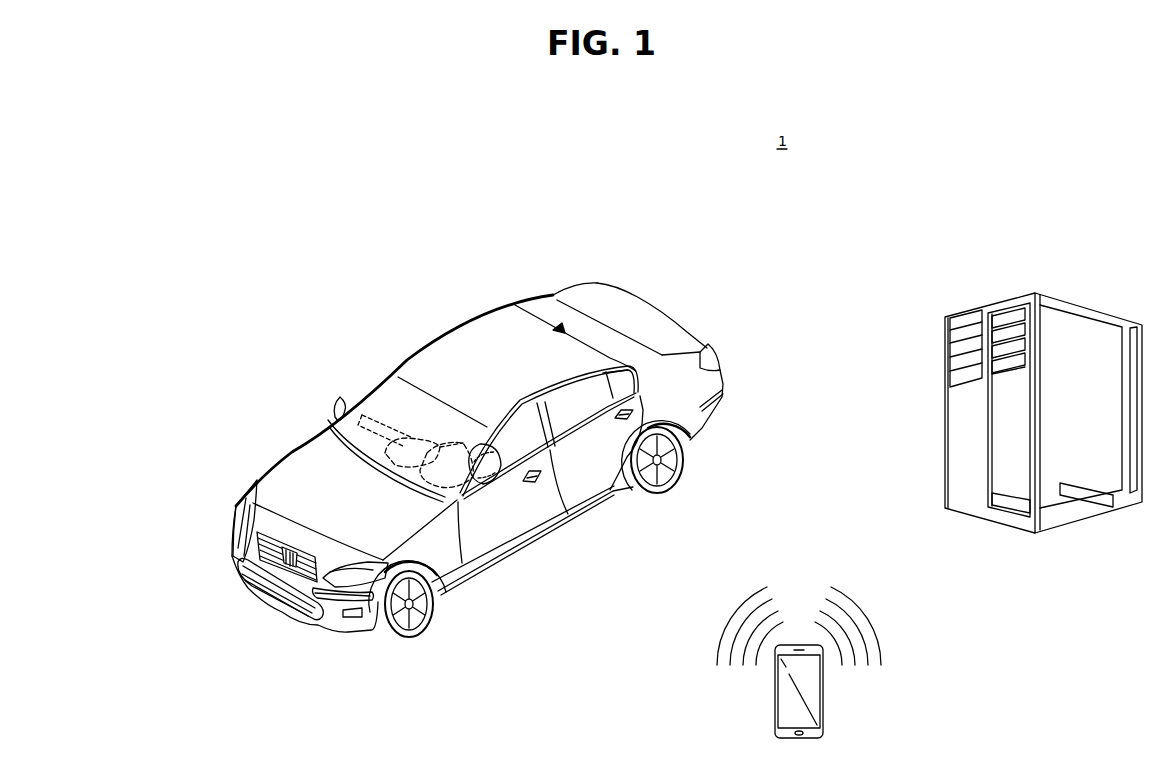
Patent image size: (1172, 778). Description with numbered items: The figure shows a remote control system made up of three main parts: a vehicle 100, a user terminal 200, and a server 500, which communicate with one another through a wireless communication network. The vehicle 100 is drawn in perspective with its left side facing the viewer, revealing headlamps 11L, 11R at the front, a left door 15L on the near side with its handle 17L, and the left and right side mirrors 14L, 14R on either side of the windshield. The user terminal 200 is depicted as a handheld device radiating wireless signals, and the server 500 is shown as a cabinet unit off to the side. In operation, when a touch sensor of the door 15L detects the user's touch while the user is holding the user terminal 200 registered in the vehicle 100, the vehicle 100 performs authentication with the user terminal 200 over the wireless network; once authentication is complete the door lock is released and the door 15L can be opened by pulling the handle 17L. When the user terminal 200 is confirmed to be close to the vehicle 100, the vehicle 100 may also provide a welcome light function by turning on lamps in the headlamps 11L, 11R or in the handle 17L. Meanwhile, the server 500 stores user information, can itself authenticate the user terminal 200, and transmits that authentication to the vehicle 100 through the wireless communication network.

The vehicle 100 is at (493, 306).
The headlamp 11L is at (365, 574).
The headlamp 11R is at (240, 500).
The left side mirror 14L is at (490, 485).
The right side mirror 14R is at (334, 406).
The door 15L is at (522, 512).
The handle 17L is at (540, 478).
The user terminal 200 is at (797, 650).
The server 500 is at (1086, 301).